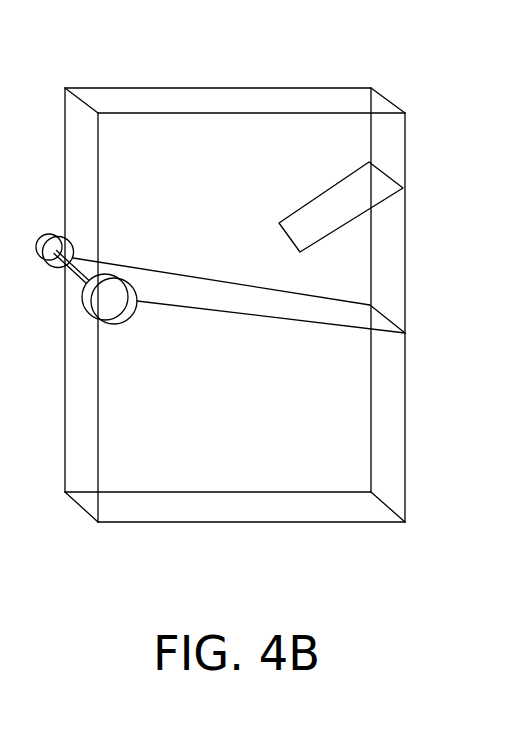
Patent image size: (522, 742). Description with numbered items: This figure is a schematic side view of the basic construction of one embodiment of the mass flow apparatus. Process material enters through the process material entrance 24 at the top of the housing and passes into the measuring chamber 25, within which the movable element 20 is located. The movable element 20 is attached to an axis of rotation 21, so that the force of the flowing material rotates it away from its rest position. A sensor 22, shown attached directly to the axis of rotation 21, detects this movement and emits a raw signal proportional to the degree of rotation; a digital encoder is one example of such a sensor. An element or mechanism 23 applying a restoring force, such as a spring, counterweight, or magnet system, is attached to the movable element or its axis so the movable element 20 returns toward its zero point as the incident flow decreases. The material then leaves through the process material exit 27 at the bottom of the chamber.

The movable element 20 is at (322, 305).
The axis of rotation 21 is at (85, 268).
The sensor 22 is at (63, 241).
The restoring force element 23 is at (82, 320).
The process material entrance 24 is at (222, 98).
The measuring chamber 25 is at (405, 308).
The process material exit 27 is at (287, 510).